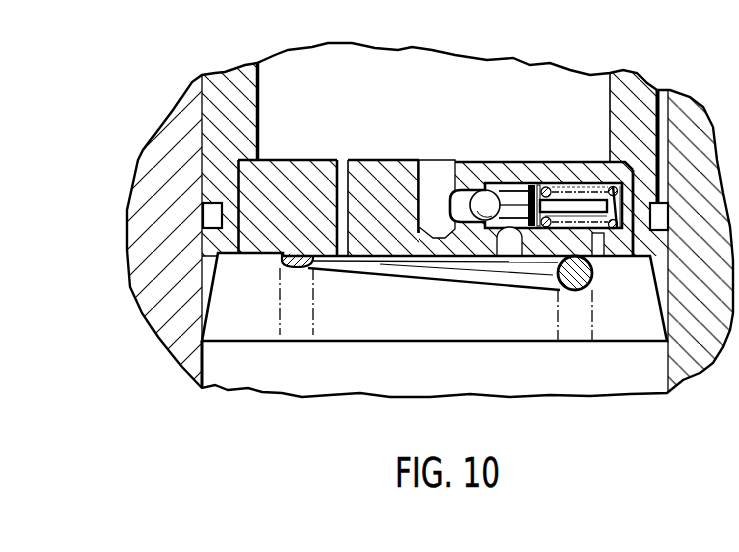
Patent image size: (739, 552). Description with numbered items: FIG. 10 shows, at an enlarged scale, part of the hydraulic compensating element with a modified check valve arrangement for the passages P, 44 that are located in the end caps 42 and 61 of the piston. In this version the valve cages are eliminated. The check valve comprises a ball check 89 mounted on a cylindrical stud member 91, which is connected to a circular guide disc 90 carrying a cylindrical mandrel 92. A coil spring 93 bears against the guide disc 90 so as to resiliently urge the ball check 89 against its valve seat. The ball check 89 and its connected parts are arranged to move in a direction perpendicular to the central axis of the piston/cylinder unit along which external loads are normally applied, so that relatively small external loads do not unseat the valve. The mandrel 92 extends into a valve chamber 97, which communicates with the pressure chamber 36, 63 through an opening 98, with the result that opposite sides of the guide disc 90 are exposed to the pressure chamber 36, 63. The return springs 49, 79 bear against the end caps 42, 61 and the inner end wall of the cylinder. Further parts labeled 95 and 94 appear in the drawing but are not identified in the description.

The end cap 42 is at (246, 135).
The piston end cap 61 is at (268, 160).
The pressure chamber 95 is at (316, 140).
The passage P is at (431, 167).
The spring-loaded check-valve passage 44 is at (410, 167).
The ball check 89 is at (475, 180).
The cylindrical stud member 91 is at (515, 190).
The circular guide disc 90 is at (532, 186).
The valve chamber 97 is at (566, 185).
The coil spring 93 is at (612, 206).
The cylindrical mandrel 92 is at (559, 213).
The opening 98 is at (600, 254).
The housing wall 94 is at (633, 234).
The pressure chamber 36 is at (434, 323).
The pressure chamber 63 is at (352, 310).
The return spring 49 is at (405, 318).
The return spring 79 is at (296, 272).